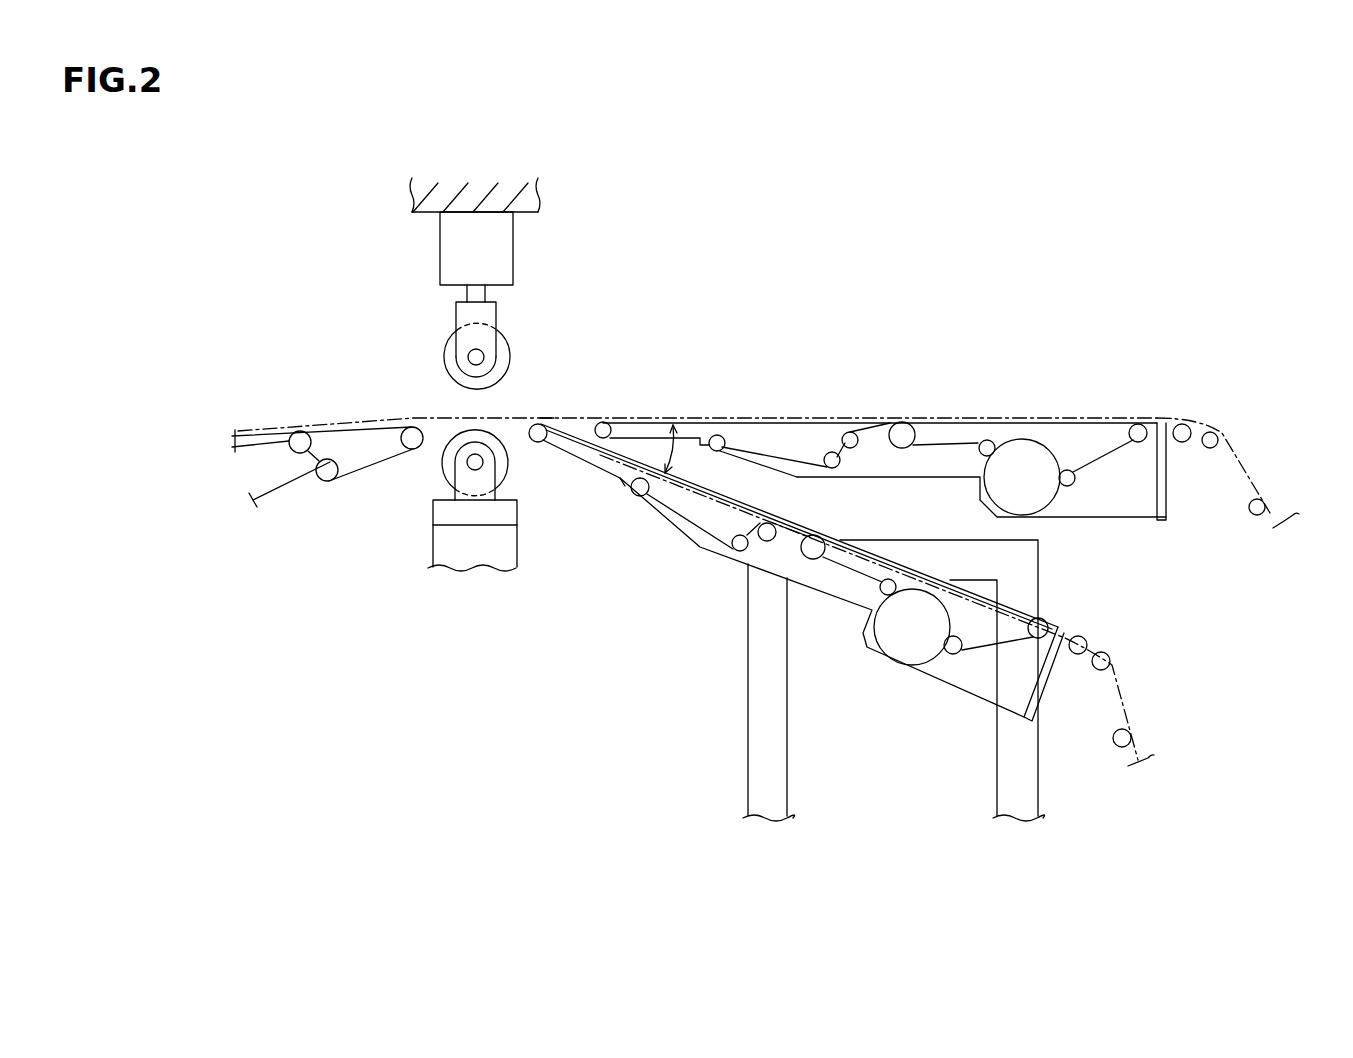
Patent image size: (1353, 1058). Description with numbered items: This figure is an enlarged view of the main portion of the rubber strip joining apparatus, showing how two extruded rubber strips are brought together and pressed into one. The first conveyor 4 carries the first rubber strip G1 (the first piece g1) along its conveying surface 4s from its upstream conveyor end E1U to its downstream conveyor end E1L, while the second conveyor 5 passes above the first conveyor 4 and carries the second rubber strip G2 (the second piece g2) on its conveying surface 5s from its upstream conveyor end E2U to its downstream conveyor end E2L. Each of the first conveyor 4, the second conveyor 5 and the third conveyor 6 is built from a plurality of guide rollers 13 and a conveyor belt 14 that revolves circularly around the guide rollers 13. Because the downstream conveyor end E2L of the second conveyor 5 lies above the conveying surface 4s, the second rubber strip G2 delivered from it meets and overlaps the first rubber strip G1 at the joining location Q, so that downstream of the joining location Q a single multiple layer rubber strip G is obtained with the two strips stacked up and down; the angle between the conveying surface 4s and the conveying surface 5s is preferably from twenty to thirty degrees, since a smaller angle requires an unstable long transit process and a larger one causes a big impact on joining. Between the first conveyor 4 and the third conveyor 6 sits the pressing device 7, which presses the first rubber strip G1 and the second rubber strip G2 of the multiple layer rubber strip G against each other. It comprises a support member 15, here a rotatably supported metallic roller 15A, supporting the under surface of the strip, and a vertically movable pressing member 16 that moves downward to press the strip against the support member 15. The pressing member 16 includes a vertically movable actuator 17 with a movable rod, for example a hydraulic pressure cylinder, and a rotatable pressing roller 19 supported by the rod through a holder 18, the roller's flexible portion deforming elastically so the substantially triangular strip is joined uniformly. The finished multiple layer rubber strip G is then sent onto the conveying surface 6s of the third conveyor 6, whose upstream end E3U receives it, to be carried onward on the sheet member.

The first conveyor 4 is at (948, 712).
The conveying surface 4s is at (870, 647).
The second conveyor 5 is at (1152, 537).
The conveying surface 5s is at (957, 423).
The third conveyor 6 is at (270, 463).
The conveying surface 6s is at (248, 432).
The pressing device 7 is at (545, 240).
The guide rollers 13 is at (737, 550).
The conveyor belt 14 is at (1003, 648).
The support member 15 is at (428, 533).
The metallic roller 15A is at (442, 467).
The pressing member 16 is at (533, 329).
The pressing roller 19 is at (512, 350).
The actuator 17 is at (438, 248).
The holder 18 is at (457, 316).
The multiple layer rubber strip G is at (313, 423).
The first rubber strip G1 is at (959, 610).
The first glass piece g1 is at (1124, 692).
The second rubber strip G2 is at (1250, 427).
The second glass piece g2 is at (1240, 455).
The joining location Q is at (547, 411).
The downstream conveyor end E1L is at (540, 450).
The upstream conveyor end E1U is at (1058, 618).
The downstream conveyor end E2L is at (608, 418).
The upstream conveyor end E2U is at (1138, 415).
The upper end of upstream conveyor E3U is at (405, 457).